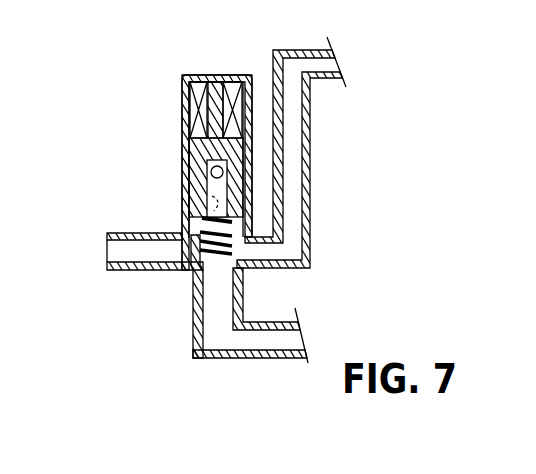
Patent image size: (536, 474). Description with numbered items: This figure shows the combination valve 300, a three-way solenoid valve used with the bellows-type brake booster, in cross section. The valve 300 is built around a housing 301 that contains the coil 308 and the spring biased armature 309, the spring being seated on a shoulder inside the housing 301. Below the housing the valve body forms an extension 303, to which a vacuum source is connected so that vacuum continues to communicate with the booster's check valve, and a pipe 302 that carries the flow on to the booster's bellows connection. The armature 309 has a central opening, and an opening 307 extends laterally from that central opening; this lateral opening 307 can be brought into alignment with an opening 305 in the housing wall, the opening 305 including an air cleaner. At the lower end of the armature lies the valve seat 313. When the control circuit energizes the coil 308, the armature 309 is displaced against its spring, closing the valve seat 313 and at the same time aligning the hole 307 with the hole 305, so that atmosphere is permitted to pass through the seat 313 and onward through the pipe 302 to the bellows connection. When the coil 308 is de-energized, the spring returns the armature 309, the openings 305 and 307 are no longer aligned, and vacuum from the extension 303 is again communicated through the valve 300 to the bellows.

The valve 300 is at (184, 190).
The housing 301 is at (199, 75).
The pipe 302 is at (238, 75).
The extension 303 is at (120, 265).
The opening 305 is at (195, 207).
The opening 307 is at (205, 171).
The coil 308 is at (192, 102).
The armature 309 is at (196, 152).
The valve seat 313 is at (187, 250).